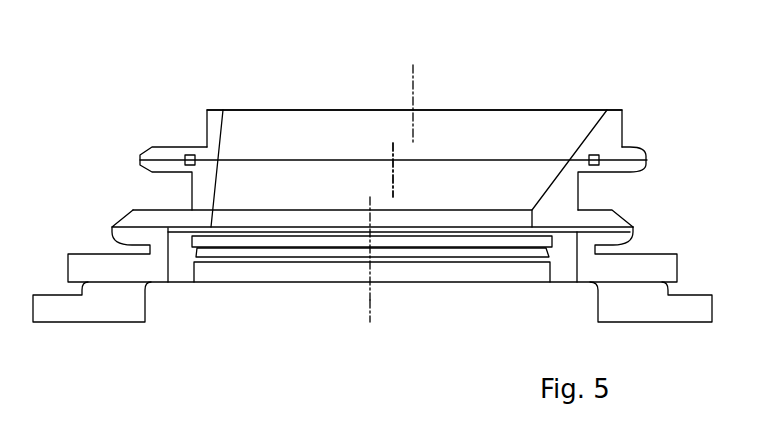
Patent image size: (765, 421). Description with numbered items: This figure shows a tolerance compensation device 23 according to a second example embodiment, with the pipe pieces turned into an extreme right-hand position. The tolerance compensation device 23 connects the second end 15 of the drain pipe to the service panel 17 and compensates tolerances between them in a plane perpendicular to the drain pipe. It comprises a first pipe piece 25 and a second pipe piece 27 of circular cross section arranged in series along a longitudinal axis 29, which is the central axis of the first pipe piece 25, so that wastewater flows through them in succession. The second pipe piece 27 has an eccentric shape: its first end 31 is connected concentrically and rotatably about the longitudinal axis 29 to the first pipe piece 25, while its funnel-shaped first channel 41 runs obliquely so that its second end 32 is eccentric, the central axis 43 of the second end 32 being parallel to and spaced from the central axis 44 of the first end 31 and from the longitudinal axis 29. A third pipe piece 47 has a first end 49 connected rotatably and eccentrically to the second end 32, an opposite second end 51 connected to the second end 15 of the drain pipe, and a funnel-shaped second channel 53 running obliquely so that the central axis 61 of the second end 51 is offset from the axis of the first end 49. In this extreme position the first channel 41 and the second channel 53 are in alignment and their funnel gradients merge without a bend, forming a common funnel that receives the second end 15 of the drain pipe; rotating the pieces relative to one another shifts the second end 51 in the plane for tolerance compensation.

The second end of the drain pipe 15 is at (373, 76).
The service panel 17 is at (339, 324).
The tolerance compensation device 23 is at (684, 72).
The first pipe piece 25 is at (82, 263).
The second pipe piece 27 is at (205, 187).
The longitudinal axis 29 is at (369, 302).
The first end of the second pipe piece 31 is at (553, 220).
The second end of the second pipe piece 32 is at (570, 170).
The first channel 41 is at (502, 199).
The central axis of the second end of the second pipe piece 43 is at (393, 163).
The central axis of the first end of the second pipe piece 44 is at (368, 202).
The third pipe piece 47 is at (213, 122).
The first end of the third pipe piece 49 is at (622, 146).
The second end of the third pipe piece 51 is at (608, 125).
The second channel 53 is at (502, 149).
The central axis of the second end of the third pipe piece 61 is at (412, 72).